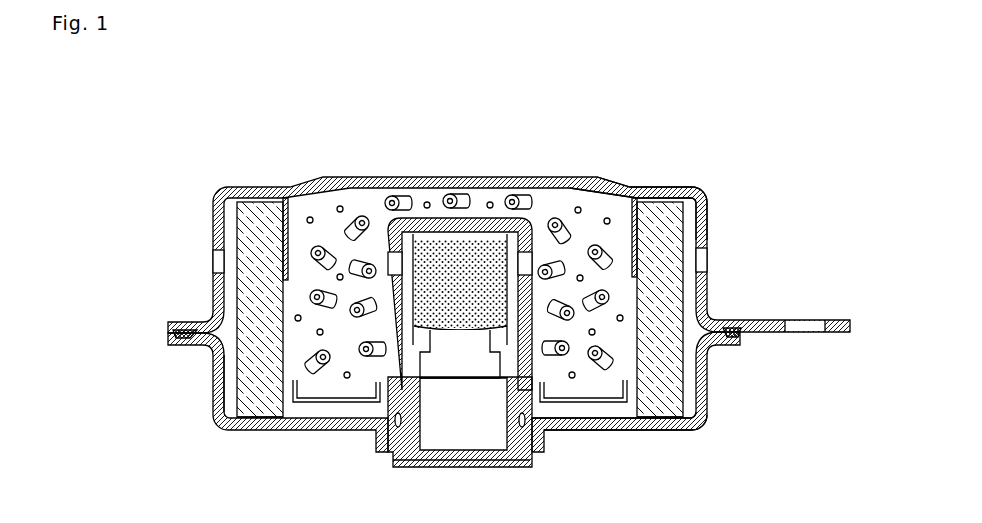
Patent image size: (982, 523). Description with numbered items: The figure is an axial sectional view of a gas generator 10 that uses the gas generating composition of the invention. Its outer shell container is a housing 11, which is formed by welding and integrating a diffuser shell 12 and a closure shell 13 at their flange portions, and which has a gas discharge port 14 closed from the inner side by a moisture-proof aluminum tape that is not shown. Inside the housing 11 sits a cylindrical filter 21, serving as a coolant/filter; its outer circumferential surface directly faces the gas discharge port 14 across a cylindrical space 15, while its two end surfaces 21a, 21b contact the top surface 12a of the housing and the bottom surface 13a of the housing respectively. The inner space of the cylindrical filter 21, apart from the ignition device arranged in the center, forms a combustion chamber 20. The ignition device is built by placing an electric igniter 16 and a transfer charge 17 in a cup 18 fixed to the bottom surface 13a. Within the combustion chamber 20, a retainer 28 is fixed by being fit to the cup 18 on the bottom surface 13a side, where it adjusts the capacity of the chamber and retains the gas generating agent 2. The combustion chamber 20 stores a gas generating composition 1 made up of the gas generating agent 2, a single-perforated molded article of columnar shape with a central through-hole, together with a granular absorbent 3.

The gas generating composition 1 is at (459, 231).
The gas generating agent 2 is at (400, 197).
The granular absorbent 3 is at (340, 206).
The gas generator 10 is at (456, 287).
The housing 11 is at (456, 307).
The diffuser shell 12 is at (479, 228).
The top surface of the housing 12a is at (650, 185).
The closure shell 13 is at (424, 411).
The bottom surface of the housing 13a is at (623, 432).
The gas discharge port 14 is at (698, 257).
The cylindrical space 15 is at (228, 380).
The electric igniter 16 is at (474, 438).
The transfer charge 17 is at (468, 250).
The cup 18 is at (420, 224).
The combustion chamber 20 is at (598, 211).
The cylindrical filter 21 is at (409, 309).
The end surface of the cylindrical filter 21a is at (258, 197).
The end surface of the cylindrical filter 21b is at (258, 417).
The retainer 28 is at (331, 402).